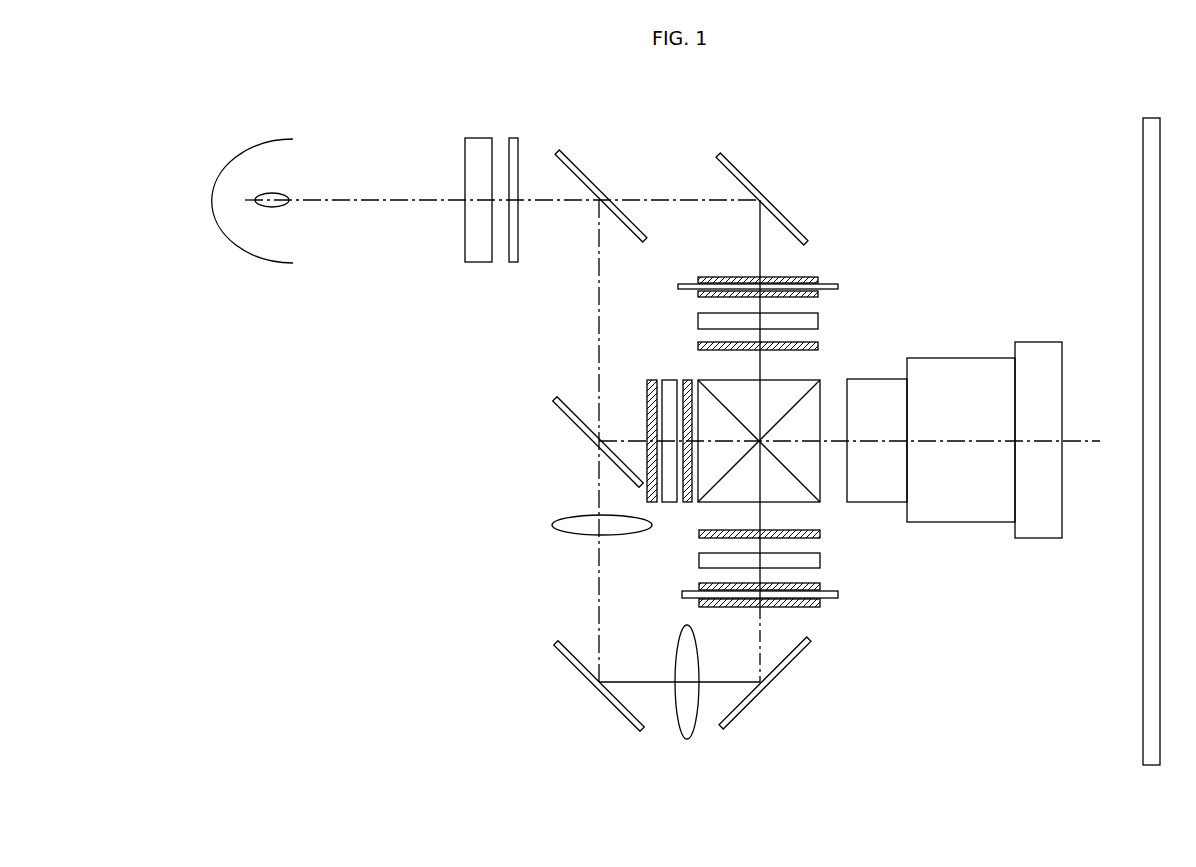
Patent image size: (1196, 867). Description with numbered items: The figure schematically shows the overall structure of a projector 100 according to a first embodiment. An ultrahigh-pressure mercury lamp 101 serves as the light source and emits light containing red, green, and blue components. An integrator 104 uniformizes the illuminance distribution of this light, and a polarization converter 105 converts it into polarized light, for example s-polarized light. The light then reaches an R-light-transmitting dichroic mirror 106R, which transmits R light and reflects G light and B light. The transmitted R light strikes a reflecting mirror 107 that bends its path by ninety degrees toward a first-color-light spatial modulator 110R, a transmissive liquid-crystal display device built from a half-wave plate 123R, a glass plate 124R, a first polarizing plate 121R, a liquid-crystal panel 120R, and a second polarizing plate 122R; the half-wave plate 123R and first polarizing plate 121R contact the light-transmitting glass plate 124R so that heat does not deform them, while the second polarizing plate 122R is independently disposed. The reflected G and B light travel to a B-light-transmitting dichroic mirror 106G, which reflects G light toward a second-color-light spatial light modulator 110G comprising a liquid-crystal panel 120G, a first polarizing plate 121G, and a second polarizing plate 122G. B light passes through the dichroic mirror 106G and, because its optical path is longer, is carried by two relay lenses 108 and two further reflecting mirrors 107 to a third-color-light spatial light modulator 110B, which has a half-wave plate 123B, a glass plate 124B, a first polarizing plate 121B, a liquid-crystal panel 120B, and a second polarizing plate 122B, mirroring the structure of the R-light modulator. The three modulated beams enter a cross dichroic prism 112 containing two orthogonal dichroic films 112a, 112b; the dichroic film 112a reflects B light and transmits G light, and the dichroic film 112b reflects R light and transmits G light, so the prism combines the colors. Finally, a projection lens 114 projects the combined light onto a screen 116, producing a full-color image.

The projection type display apparatus 100 is at (804, 115).
The ultrahigh-pressure mercury lamp 101 is at (231, 246).
The integrator 104 is at (473, 138).
The polarization converter 105 is at (512, 138).
The R-light-transmitting dichroic mirror 106R is at (578, 170).
The B-light-transmitting dichroic mirror 106G is at (571, 424).
The reflecting mirror 107 is at (745, 170).
The relay lens 108 is at (553, 524).
The first-color-light spatial modulator 110R is at (853, 271).
The second-color-light spatial light modulator 110G is at (526, 518).
The third-color-light spatial light modulator 110B is at (854, 615).
The cross dichroic prism 112 is at (778, 432).
The dichroic film 112a is at (797, 390).
The dichroic film 112b is at (722, 392).
The projection lens 114 is at (1040, 528).
The screen 116 is at (1148, 118).
The liquid-crystal panel 120R is at (818, 321).
The liquid-crystal panel 120G is at (669, 504).
The liquid-crystal panel 120B is at (822, 561).
The first polarizing plate 121R is at (818, 294).
The first polarizing plate 121G is at (652, 504).
The first polarizing plate 121B is at (822, 587).
The second polarizing plate 122R is at (826, 327).
The second polarizing plate 122G is at (688, 504).
The second polarizing plate 122B is at (822, 534).
The half-wave plate 123R is at (818, 280).
The half-wave plate 123B is at (825, 648).
The glass plate 124R is at (838, 287).
The glass plate 124B is at (838, 595).